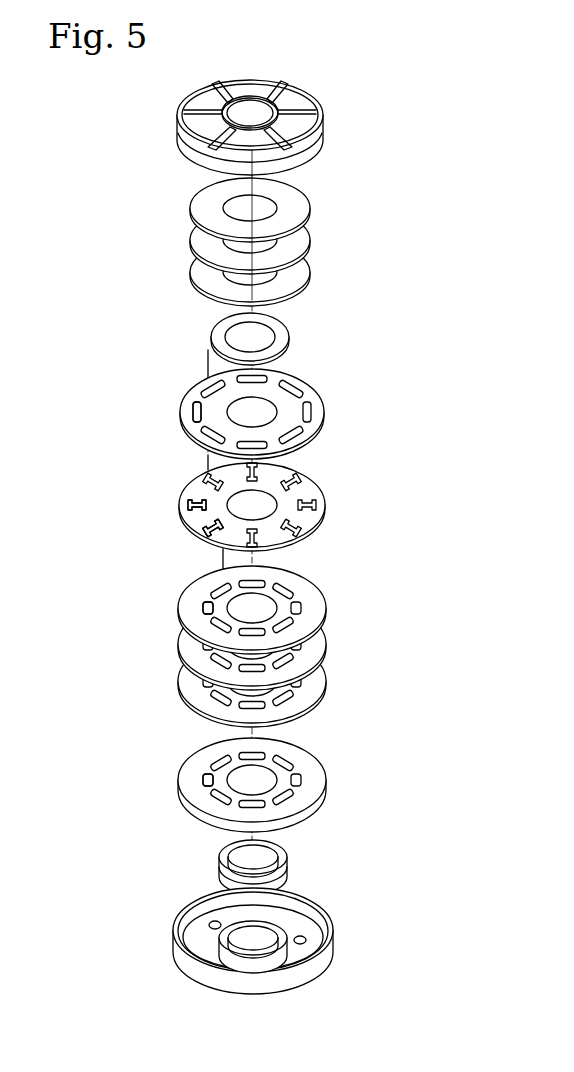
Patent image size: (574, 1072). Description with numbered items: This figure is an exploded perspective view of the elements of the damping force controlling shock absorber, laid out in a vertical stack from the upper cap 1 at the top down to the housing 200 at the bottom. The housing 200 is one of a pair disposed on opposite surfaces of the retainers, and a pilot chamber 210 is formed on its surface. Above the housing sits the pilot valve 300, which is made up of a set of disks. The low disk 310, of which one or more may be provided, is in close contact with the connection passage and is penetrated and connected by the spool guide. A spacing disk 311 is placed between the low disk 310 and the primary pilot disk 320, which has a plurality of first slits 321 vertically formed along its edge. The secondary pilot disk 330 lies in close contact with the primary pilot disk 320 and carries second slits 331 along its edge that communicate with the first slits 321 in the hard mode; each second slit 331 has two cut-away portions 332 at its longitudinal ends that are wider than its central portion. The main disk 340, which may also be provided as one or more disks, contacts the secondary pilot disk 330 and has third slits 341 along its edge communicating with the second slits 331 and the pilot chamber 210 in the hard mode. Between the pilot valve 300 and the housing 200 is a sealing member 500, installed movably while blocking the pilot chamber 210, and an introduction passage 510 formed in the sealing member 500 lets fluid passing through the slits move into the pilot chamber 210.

The upper cap 1 is at (311, 97).
The housing 200 is at (248, 929).
The pilot chamber 210 is at (197, 936).
The pilot valve 300 is at (362, 252).
The low disk 310 is at (303, 240).
The spacing disk 311 is at (288, 334).
The primary pilot disk 320 is at (246, 412).
The first slit 321 is at (191, 416).
The secondary pilot disk 330 is at (250, 502).
The second slit 331 is at (195, 503).
The cut-away portion 332 is at (203, 530).
The main disk 340 is at (250, 637).
The third slit 341 is at (205, 612).
The sealing member 500 is at (250, 777).
The introduction passage 510 is at (205, 783).